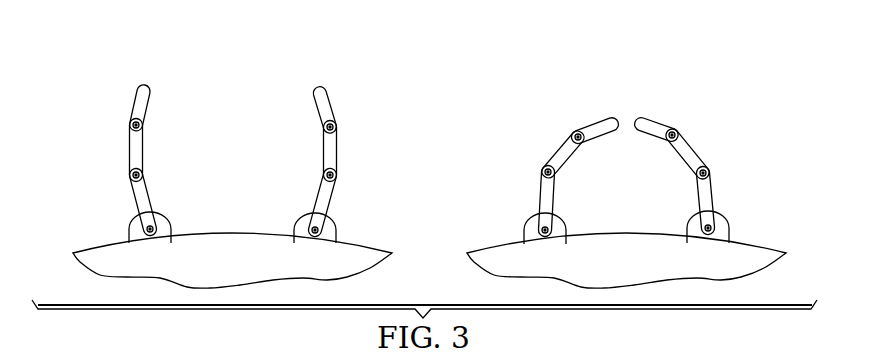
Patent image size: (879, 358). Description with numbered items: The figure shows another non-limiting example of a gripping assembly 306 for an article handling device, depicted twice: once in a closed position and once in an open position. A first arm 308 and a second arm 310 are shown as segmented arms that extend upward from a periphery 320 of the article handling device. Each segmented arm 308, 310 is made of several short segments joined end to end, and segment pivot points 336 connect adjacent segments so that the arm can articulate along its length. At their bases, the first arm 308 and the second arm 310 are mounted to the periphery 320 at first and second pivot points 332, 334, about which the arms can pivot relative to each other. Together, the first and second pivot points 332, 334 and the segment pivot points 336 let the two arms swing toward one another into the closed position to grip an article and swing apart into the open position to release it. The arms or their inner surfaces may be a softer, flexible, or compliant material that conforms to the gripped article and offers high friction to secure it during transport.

The gripping assembly 306 is at (201, 64).
The first arm 308 is at (144, 150).
The second arm 310 is at (323, 150).
The periphery 320 is at (250, 268).
The first pivot point 332 is at (136, 226).
The second pivot point 334 is at (330, 226).
The segment pivot points 336 is at (134, 119).